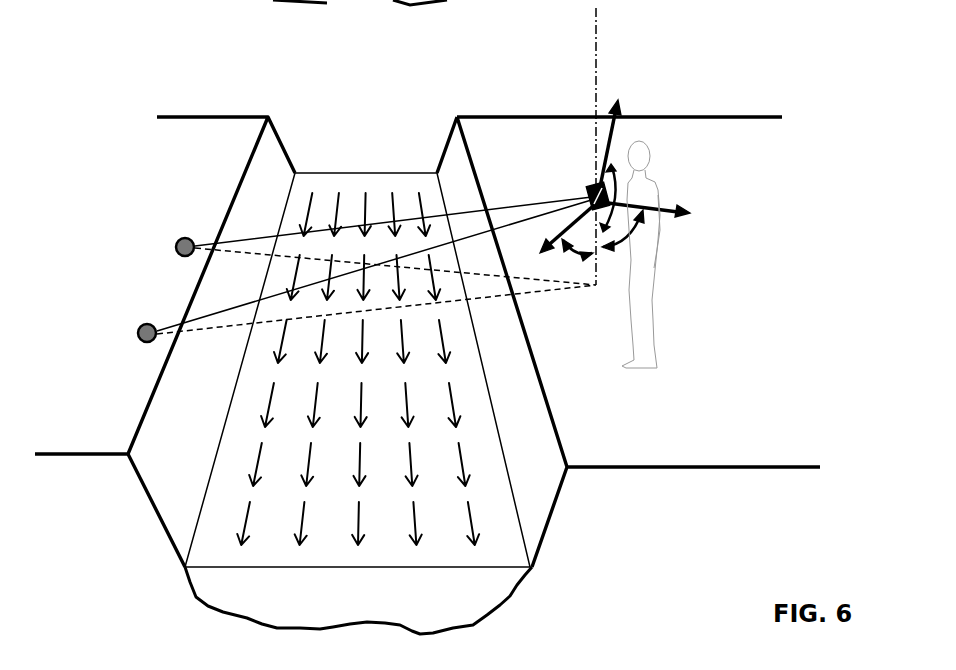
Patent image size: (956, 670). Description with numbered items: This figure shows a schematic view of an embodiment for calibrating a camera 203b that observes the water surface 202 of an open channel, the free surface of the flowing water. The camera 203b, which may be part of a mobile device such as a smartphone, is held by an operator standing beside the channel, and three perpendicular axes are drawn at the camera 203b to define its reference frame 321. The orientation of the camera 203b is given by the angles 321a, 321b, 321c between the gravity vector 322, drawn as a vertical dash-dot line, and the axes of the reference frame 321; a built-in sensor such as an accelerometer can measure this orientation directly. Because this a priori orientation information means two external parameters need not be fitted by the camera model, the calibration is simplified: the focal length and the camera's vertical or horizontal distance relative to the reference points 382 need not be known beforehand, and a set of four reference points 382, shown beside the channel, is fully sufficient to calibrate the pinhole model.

The water surface 202 is at (305, 195).
The reference points 382 is at (185, 238).
The gravity vector 322 is at (598, 57).
The camera 203b is at (592, 187).
The reference frame 321 is at (615, 131).
The angle 321a is at (608, 190).
The angle 321b is at (632, 237).
The angle 321c is at (597, 250).